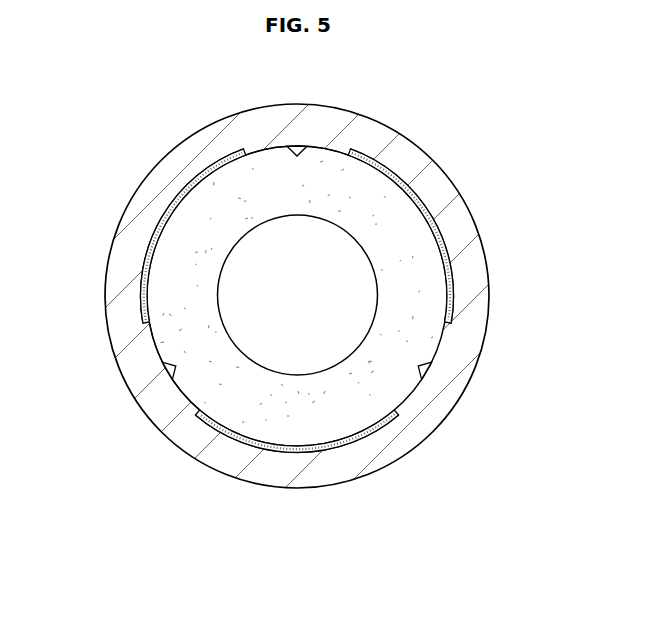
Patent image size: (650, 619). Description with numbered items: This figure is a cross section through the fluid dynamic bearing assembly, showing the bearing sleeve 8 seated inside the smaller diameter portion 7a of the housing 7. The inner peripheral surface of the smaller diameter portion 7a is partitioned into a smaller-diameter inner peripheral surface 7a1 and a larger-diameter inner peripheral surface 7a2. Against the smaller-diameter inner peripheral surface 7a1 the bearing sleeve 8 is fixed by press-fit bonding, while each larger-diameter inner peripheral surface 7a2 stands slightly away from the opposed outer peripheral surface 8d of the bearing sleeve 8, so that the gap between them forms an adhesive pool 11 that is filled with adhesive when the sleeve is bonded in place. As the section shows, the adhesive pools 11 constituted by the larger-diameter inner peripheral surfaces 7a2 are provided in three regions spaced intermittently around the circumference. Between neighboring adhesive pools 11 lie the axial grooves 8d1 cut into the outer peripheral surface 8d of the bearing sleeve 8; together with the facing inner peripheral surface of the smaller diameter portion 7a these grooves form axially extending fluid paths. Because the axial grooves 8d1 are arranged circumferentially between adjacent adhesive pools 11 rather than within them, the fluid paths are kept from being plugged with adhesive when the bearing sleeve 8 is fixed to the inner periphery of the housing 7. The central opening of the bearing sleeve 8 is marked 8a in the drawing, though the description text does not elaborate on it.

The housing 7 is at (158, 168).
The smaller diameter portion 7a is at (297, 150).
The smaller-diameter inner peripheral surface 7a1 is at (190, 393).
The larger-diameter inner peripheral surface 7a2 is at (155, 240).
The bearing sleeve 8 is at (360, 194).
The central hole of inner member 8a is at (341, 253).
The outer peripheral surface 8d is at (440, 347).
The axial grooves 8d1 is at (297, 146).
The adhesive pool 11 is at (142, 290).